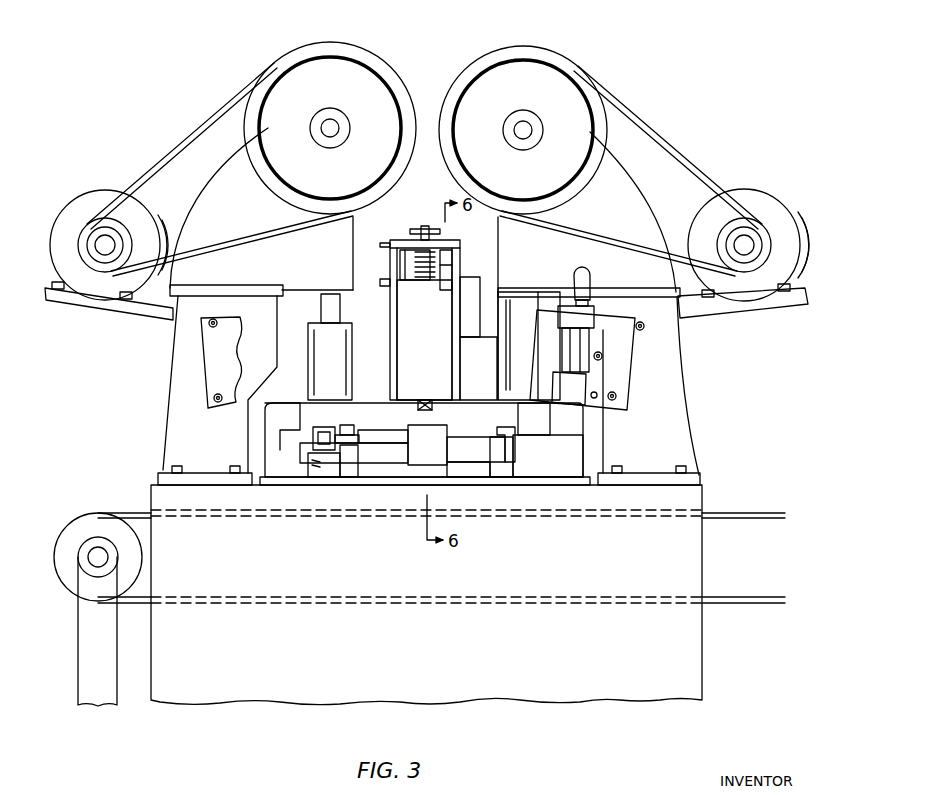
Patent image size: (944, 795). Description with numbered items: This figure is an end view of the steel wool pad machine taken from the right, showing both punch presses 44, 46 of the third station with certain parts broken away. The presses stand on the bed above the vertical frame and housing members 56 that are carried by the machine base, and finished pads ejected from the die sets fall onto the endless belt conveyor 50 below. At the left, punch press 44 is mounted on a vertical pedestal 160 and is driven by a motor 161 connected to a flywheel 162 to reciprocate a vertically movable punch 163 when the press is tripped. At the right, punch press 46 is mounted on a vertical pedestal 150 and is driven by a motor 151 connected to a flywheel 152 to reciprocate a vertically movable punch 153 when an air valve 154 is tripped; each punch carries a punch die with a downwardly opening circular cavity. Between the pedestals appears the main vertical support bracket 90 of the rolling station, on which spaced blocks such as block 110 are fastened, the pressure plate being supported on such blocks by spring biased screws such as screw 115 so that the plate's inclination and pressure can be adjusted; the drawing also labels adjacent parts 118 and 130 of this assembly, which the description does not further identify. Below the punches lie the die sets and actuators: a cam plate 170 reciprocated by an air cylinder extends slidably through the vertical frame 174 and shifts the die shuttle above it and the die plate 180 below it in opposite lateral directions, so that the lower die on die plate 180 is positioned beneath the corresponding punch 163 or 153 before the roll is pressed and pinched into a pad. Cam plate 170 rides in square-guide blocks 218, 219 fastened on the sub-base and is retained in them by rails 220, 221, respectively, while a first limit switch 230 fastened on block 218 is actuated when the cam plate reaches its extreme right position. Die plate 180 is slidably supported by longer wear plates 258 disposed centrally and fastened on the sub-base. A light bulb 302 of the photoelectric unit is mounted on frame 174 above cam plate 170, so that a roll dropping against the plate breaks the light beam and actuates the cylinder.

The punch press 44 is at (204, 176).
The punch press 46 is at (622, 158).
The endless belt conveyor 50 is at (95, 512).
The vertical frame and housing members 56 is at (706, 650).
The main vertical support bracket 90 is at (455, 262).
The block 110 is at (395, 244).
The spring biased screw 115 is at (415, 228).
The housing wall 118 is at (392, 260).
The plunger body 130 is at (396, 302).
The vertical pedestal 150 is at (683, 350).
The motor 151 is at (766, 190).
The flywheel 152 is at (571, 62).
The vertically movable punch 153 is at (490, 300).
The air valve 154 is at (592, 312).
The vertical pedestal 160 is at (165, 373).
The motor 161 is at (110, 190).
The flywheel 162 is at (345, 48).
The vertically movable punch 163 is at (352, 365).
The cam plate 170 is at (455, 448).
The vertical frame 174 is at (578, 450).
The die plate 180 is at (466, 462).
The square-guide block 218 is at (340, 470).
The square-guide block 219 is at (513, 455).
The rail 220 is at (345, 425).
The rail 221 is at (498, 428).
The first limit switch 230 is at (315, 440).
The wear plate 258 is at (478, 480).
The light bulb 302 is at (428, 400).